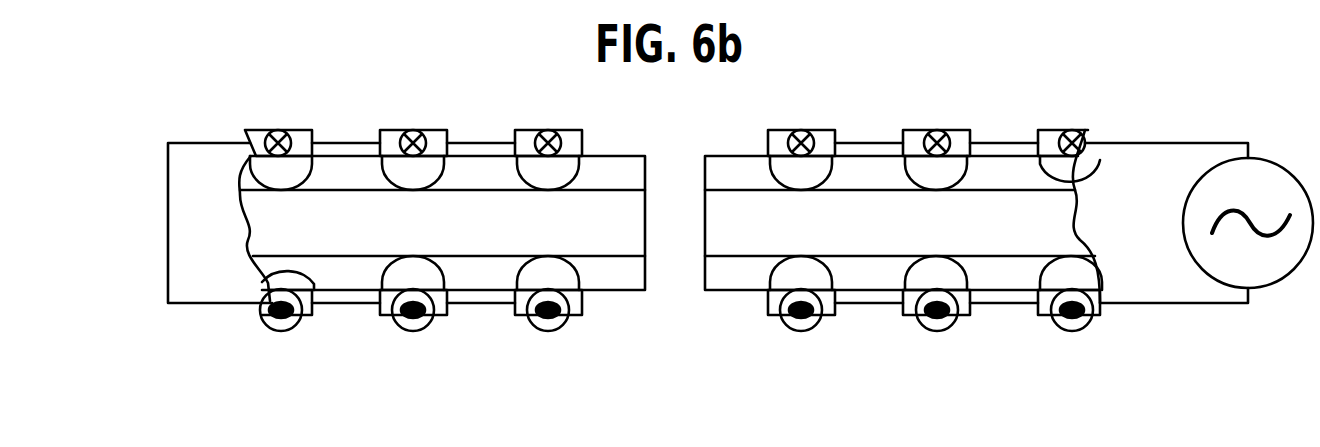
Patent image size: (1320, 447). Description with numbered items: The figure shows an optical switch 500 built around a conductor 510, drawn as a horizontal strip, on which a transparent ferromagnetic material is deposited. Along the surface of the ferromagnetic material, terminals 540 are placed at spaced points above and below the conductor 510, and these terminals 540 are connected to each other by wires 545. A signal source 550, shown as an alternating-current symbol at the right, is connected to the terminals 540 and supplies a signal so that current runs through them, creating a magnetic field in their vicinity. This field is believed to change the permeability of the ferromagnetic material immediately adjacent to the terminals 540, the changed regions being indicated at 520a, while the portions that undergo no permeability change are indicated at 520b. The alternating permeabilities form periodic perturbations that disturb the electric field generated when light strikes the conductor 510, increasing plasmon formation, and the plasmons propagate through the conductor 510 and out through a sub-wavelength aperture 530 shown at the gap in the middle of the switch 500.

The optical switch 500 is at (272, 349).
The conductor 510 is at (283, 233).
The permeability-changed portion of ferromagnetic material 520a is at (425, 272).
The unchanged portion of ferromagnetic material 520b is at (610, 267).
The sub-wavelength aperture 530 is at (713, 153).
The terminal 540 is at (380, 131).
The wire 545 is at (482, 141).
The signal source 550 is at (1248, 178).